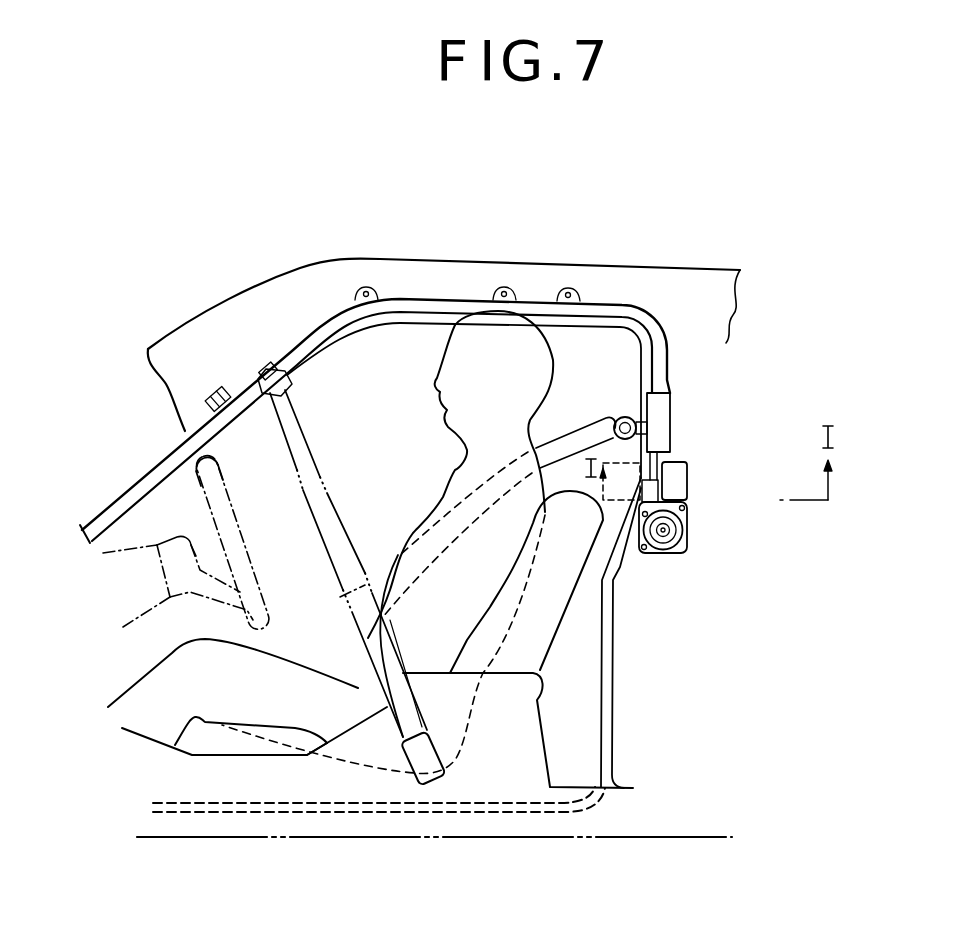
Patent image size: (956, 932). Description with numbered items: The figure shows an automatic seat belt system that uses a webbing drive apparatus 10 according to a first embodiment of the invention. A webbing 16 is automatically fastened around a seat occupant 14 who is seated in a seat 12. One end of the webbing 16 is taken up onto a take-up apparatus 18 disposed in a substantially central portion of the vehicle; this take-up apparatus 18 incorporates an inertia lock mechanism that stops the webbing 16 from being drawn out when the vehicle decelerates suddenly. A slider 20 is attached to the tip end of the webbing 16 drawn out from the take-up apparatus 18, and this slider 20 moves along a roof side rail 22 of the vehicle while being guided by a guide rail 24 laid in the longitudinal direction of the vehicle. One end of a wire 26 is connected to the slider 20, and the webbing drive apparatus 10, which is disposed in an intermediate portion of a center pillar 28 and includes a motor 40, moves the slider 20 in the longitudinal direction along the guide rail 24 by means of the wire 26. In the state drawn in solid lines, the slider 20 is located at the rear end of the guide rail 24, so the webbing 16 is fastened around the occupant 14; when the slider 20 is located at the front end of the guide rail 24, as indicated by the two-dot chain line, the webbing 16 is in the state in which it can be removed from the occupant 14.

The webbing drive apparatus 10 is at (697, 532).
The seat 12 is at (543, 652).
The seat occupant 14 is at (465, 463).
The webbing 16 is at (588, 426).
The take-up apparatus 18 is at (444, 733).
The slider 20 is at (647, 428).
The roof side rail 22 is at (475, 273).
The guide rail 24 is at (652, 317).
The wire 26 is at (613, 470).
The center pillar 28 is at (620, 650).
The motor 40 is at (680, 468).